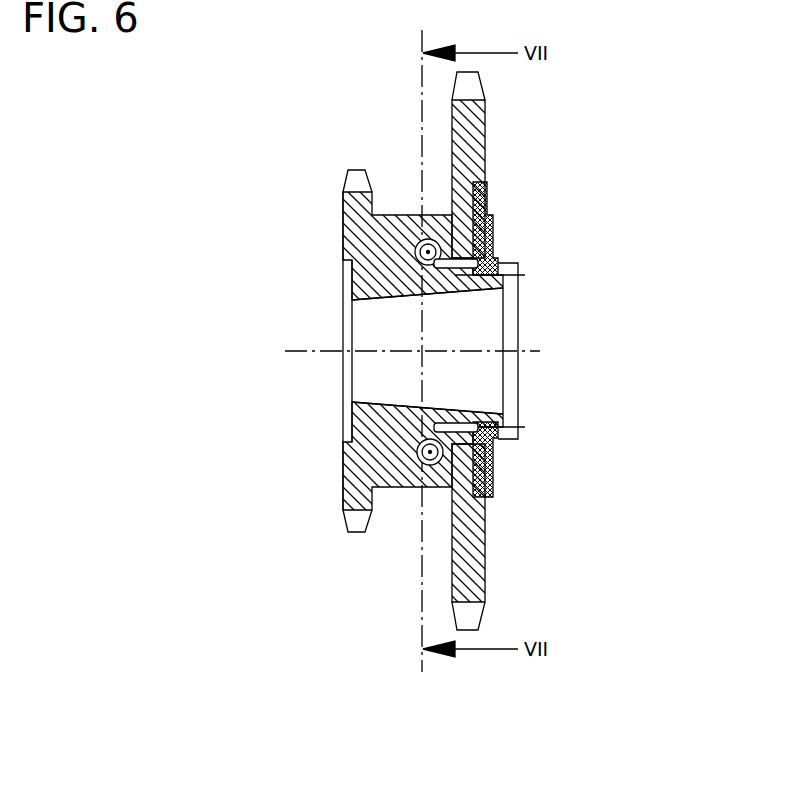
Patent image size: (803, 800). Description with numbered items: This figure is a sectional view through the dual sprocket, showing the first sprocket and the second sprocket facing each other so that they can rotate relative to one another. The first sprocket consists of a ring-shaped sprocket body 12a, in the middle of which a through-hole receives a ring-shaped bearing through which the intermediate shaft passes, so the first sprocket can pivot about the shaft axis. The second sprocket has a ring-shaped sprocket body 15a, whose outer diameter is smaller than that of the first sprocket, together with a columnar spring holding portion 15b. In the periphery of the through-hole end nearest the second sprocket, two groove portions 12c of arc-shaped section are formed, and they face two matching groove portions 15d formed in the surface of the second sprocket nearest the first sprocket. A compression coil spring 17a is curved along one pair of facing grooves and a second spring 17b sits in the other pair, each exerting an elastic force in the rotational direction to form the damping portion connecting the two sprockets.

The sprocket body 12a is at (487, 113).
The groove portions 12c is at (487, 536).
The sprocket body 15a is at (343, 204).
The spring holding portion 15b is at (393, 232).
The groove portions 15d is at (402, 488).
The spring 17a is at (431, 453).
The spring 17b is at (430, 251).